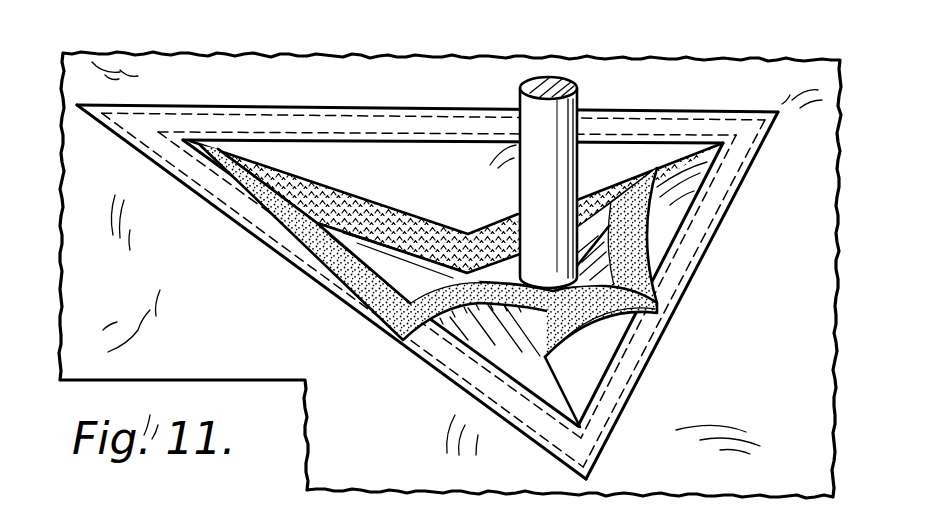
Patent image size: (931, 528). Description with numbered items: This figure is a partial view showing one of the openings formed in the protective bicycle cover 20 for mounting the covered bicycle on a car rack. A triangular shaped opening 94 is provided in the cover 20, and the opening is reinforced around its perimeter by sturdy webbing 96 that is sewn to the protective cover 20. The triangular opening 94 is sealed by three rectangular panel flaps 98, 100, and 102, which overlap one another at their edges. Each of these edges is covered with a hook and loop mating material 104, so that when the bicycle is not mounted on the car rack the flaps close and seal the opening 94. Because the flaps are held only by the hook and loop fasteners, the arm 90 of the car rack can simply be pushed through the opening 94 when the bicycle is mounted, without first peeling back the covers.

The protective cover 20 is at (752, 58).
The arm of car rack 90 is at (578, 97).
The triangular shaped opening 94 is at (408, 257).
The sturdy webbing 96 is at (185, 112).
The rectangular panel flap 98 is at (398, 157).
The rectangular panel flap 100 is at (676, 221).
The rectangular panel flap 102 is at (460, 354).
The hook and loop mating material 104 is at (317, 243).